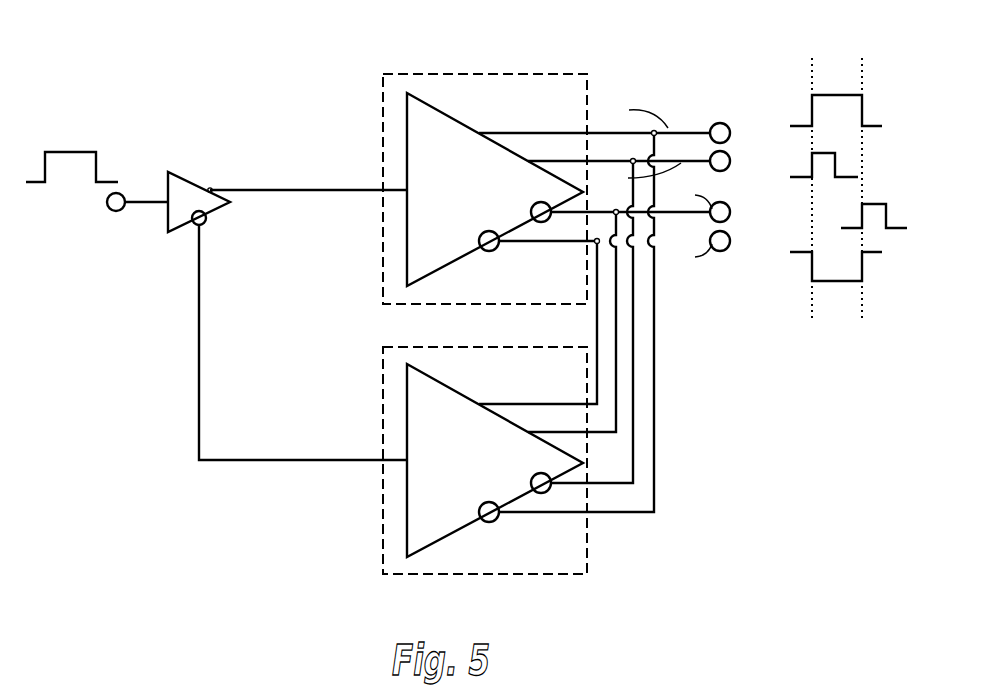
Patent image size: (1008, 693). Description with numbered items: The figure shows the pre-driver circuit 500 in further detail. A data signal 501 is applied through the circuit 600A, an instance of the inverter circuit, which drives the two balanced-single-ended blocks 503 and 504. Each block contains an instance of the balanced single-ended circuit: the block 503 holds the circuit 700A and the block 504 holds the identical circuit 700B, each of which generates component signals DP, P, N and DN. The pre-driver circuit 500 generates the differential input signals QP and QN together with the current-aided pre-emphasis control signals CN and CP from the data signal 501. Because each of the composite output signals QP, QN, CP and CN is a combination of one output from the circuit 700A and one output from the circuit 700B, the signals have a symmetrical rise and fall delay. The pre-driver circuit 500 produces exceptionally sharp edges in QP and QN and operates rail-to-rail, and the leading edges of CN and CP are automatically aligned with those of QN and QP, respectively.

The pre-driver circuit 500 is at (462, 27).
The data signal 501 is at (117, 213).
The circuit 600A is at (187, 205).
The balanced-single-ended block 503 is at (529, 113).
The balanced-single-ended block 504 is at (517, 384).
The circuit 700A is at (501, 200).
The circuit 700B is at (501, 471).